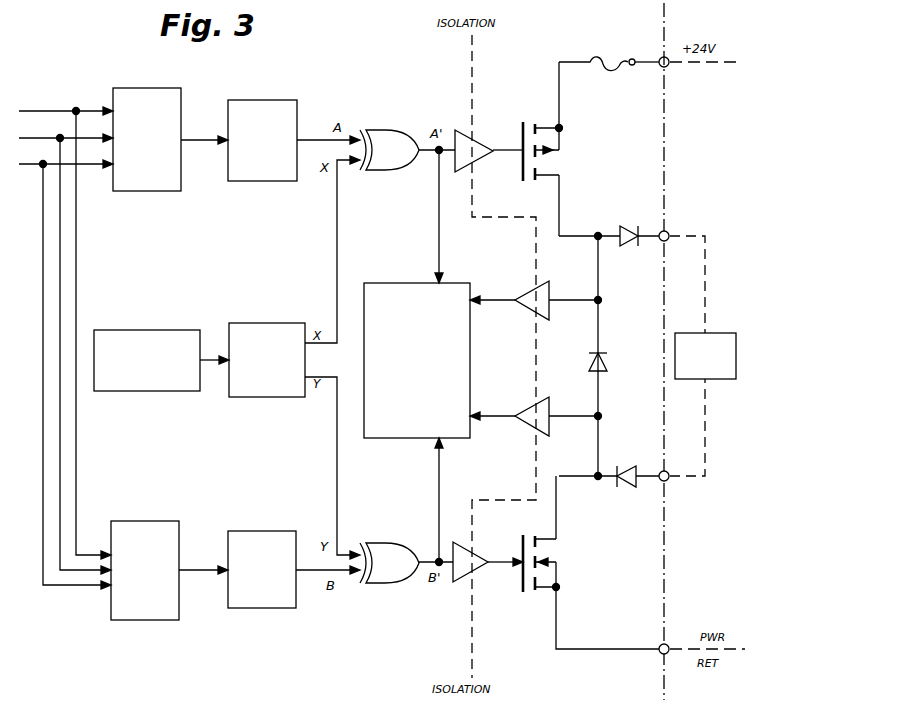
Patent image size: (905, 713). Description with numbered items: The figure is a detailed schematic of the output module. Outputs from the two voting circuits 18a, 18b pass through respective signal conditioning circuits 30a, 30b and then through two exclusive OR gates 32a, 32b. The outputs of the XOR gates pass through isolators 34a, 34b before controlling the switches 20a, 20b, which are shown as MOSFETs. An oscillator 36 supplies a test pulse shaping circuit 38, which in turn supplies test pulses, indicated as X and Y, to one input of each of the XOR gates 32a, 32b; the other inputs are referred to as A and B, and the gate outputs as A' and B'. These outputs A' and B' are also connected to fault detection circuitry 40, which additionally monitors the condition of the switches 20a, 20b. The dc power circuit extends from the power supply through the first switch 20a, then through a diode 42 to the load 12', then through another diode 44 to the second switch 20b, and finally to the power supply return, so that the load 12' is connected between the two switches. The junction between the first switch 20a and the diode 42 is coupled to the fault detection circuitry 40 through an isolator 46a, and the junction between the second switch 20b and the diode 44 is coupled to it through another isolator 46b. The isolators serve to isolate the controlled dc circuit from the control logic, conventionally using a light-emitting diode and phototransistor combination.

The voting circuit 18a is at (163, 191).
The signal conditioning circuit 30a is at (273, 181).
The exclusive OR gate 32a is at (404, 116).
The isolator 34a is at (478, 137).
The switch 20a is at (576, 122).
The oscillator 36 is at (140, 330).
The test pulse shaping circuit 38 is at (262, 323).
The fault detection circuitry 40 is at (402, 283).
The isolator 46a is at (540, 318).
The isolator 46b is at (545, 399).
The diode 42 is at (627, 247).
The diode 44 is at (622, 465).
The load 12' is at (712, 340).
The voting circuit 18b is at (145, 521).
The signal conditioning circuit 30b is at (260, 531).
The exclusive OR gate 32b is at (384, 598).
The isolator 34b is at (480, 578).
The switch 20b is at (573, 595).